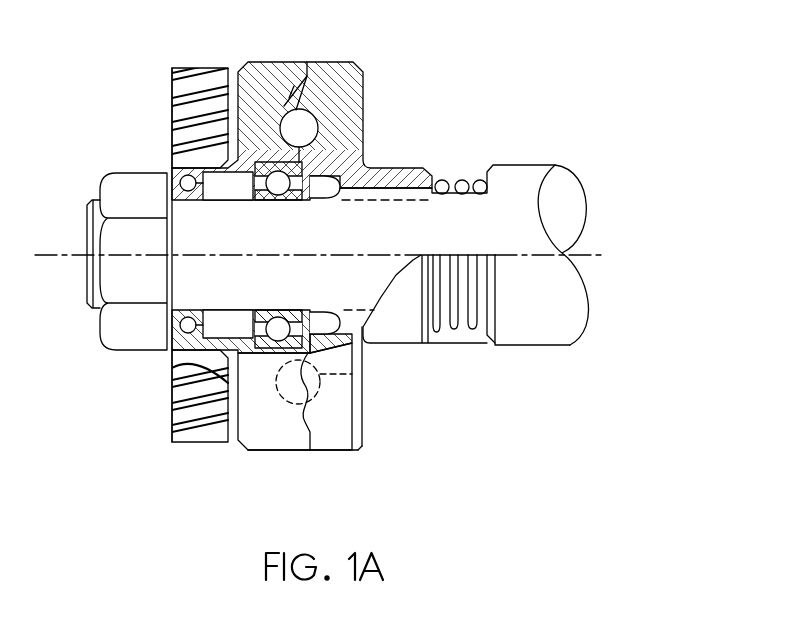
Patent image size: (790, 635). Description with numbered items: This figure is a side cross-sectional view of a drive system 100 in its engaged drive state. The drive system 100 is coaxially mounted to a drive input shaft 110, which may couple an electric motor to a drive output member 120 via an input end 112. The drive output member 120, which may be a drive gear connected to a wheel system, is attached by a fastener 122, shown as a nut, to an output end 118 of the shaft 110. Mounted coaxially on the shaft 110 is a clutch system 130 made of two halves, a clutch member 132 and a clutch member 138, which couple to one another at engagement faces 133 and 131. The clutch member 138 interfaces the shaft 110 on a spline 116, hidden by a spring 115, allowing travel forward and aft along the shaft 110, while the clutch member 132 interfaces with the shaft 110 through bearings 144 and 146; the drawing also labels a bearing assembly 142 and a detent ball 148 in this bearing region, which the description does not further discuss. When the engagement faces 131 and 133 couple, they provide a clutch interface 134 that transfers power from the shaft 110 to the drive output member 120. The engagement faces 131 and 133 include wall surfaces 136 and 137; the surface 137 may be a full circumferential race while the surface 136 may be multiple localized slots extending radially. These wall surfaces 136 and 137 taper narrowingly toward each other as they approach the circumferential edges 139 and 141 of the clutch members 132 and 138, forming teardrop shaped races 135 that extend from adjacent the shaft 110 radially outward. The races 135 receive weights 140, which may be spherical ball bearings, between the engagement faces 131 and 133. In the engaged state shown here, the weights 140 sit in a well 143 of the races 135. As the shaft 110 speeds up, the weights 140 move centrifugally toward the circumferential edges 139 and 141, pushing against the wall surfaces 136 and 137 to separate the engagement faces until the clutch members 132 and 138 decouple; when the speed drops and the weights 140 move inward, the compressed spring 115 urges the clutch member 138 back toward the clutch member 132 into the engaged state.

The drive system 100 is at (588, 133).
The drive input shaft 110 is at (560, 346).
The input end 112 is at (558, 256).
The spring 115 is at (478, 330).
The spline 116 is at (437, 332).
The output end 118 is at (167, 274).
The drive output member 120 is at (185, 443).
The fastener 122 is at (105, 351).
The clutch system 130 is at (360, 451).
The engagement face 131 is at (306, 451).
The clutch member 132 is at (253, 451).
The engagement face 133 is at (312, 432).
The clutch interface 134 is at (307, 62).
The teardrop shaped races 135 is at (302, 100).
The wall surface 136 is at (304, 106).
The wall surface 137 is at (289, 92).
The clutch member 138 is at (364, 444).
The circumferential edge 139 is at (330, 451).
The weights 140 is at (308, 130).
The circumferential edge 141 is at (250, 61).
The bearing 142 is at (262, 199).
The well 143 is at (348, 374).
The bearing 144 is at (282, 187).
The bearing 146 is at (204, 200).
The ball detent 148 is at (181, 178).